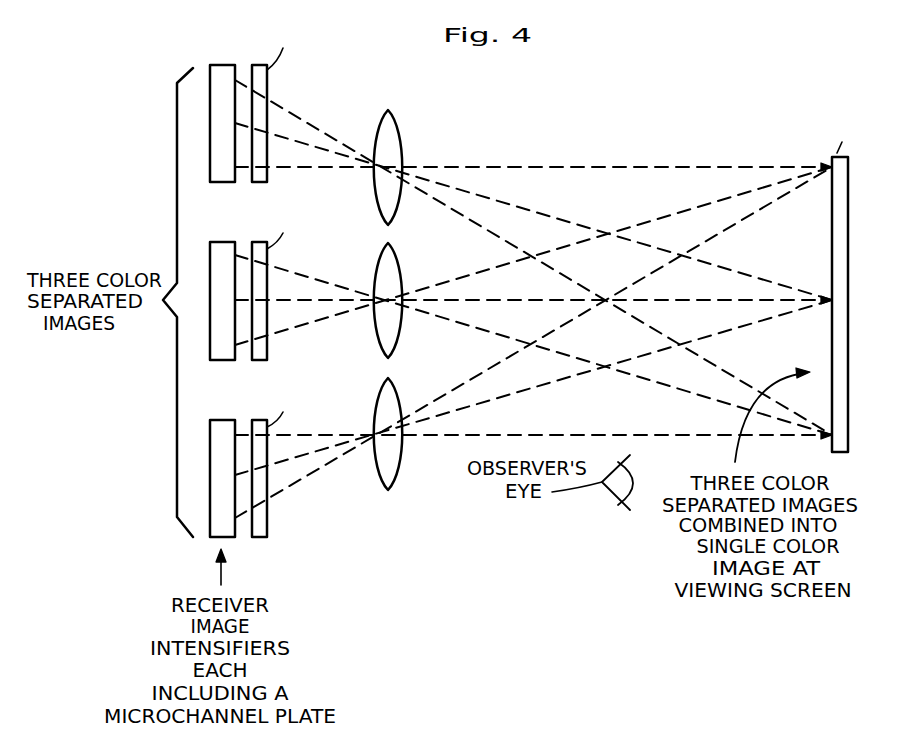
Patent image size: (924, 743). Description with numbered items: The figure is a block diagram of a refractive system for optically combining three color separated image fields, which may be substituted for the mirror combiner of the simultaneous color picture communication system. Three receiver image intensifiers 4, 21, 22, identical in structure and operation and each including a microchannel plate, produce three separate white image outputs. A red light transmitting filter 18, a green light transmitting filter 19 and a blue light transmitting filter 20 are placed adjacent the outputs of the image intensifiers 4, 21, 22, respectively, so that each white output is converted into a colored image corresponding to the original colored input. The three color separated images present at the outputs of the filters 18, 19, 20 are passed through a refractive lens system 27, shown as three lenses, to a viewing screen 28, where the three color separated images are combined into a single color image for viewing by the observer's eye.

The image intensifier 4 is at (210, 70).
The red light transmitting filter 18 is at (263, 182).
The green light transmitting filter 19 is at (263, 360).
The blue light transmitting filter 20 is at (263, 537).
The image intensifier 21 is at (213, 353).
The image intensifier 22 is at (210, 537).
The refractive lens system 27 is at (388, 503).
The viewing screen 28 is at (848, 250).